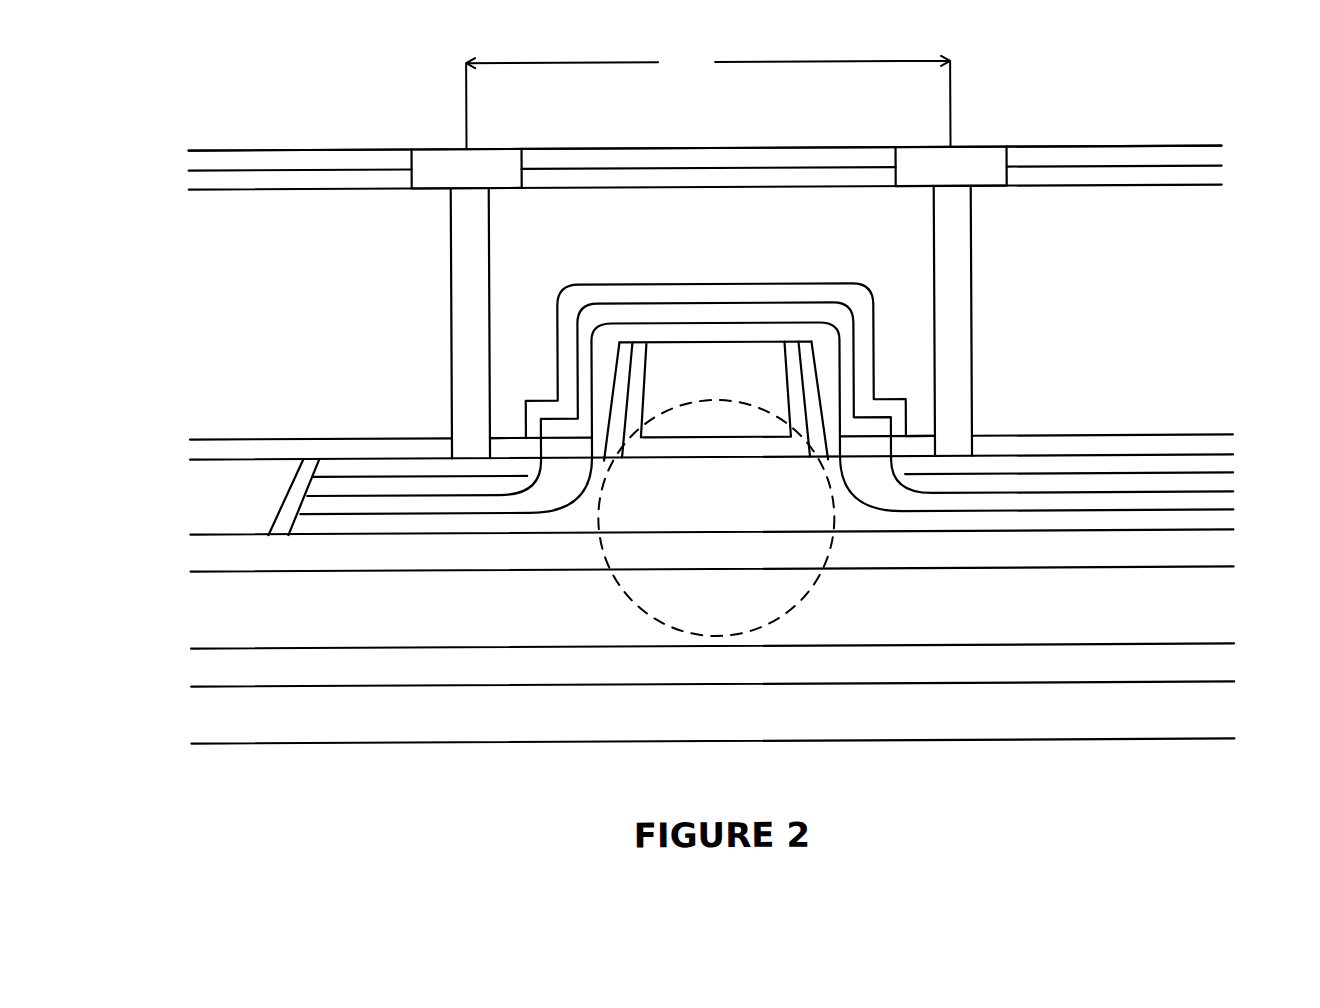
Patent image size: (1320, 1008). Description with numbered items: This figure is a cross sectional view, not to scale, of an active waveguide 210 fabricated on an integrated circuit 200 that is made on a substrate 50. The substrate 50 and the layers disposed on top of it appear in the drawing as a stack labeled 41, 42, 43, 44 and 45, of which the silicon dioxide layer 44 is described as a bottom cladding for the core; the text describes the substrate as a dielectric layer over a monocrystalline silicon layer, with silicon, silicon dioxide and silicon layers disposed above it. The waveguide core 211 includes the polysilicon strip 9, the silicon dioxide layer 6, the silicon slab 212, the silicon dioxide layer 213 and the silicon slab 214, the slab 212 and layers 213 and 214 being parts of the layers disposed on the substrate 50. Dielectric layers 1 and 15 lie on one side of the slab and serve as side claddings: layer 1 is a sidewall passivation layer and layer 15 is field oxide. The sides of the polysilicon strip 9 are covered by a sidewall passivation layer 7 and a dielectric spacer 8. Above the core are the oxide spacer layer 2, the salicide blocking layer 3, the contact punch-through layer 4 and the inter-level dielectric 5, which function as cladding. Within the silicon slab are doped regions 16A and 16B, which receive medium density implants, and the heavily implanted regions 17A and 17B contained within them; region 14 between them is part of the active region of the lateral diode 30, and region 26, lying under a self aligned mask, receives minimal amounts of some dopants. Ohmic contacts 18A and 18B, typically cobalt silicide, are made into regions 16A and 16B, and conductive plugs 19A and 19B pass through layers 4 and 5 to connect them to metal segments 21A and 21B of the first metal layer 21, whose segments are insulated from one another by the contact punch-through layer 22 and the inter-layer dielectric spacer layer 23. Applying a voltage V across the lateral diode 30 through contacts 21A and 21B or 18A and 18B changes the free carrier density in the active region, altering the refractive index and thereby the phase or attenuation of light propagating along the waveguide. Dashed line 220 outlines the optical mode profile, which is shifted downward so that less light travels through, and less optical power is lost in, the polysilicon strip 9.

The dielectric layer 1 is at (283, 520).
The oxide spacer layer 2 is at (637, 326).
The salicide blocking layer 3 is at (612, 306).
The contact punch-through layer 4 is at (583, 290).
The inter-level dielectric 5 is at (186, 229).
The silicon dioxide layer 6 is at (673, 438).
The dielectric layer 7 is at (623, 437).
The dielectric spacer 8 is at (600, 435).
The polysilicon strip 9 is at (711, 387).
The region 14 is at (662, 513).
The field oxide 15 is at (222, 494).
The doped region 16A is at (320, 507).
The doped region 16B is at (1249, 510).
The doped region 17A is at (410, 488).
The doped region 17B is at (1249, 488).
The ohmic contact 18A is at (370, 468).
The ohmic contact 18B is at (1249, 468).
The conductive plug 19A is at (469, 236).
The conductive plug 19B is at (959, 238).
The first metal layer 21 is at (217, 136).
The metal segment 21A is at (467, 169).
The metal segment 21B is at (951, 167).
The contact punch-through layer 22 is at (175, 188).
The inter-layer dielectric spacer layer 23 is at (175, 165).
The region 26 is at (760, 510).
The lateral diode 30 is at (425, 120).
The substrate bottom layer 41 is at (203, 729).
The buried layer 42 is at (203, 679).
The intermediate layer 43 is at (195, 624).
The silicon dioxide layer 44 is at (195, 567).
The device layer 45 is at (184, 500).
The substrate 50 is at (184, 673).
The integrated circuit 200 is at (277, 762).
The active waveguide 210 is at (725, 674).
The waveguide core 211 is at (718, 261).
The silicon slab 212 is at (702, 507).
The silicon dioxide layer 213 is at (704, 562).
The silicon slab 214 is at (702, 610).
The dashed line 220 is at (837, 603).
The voltage V is at (686, 59).